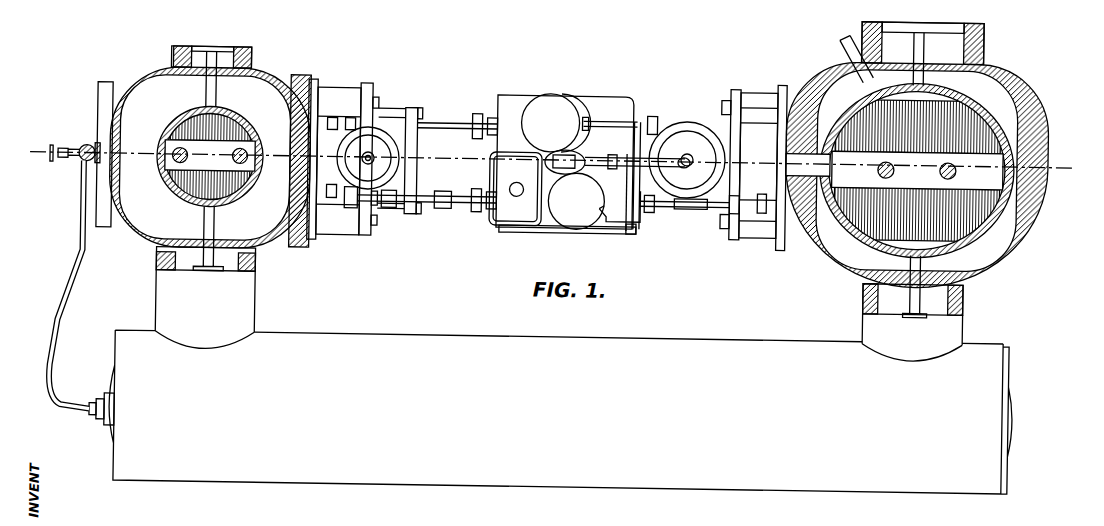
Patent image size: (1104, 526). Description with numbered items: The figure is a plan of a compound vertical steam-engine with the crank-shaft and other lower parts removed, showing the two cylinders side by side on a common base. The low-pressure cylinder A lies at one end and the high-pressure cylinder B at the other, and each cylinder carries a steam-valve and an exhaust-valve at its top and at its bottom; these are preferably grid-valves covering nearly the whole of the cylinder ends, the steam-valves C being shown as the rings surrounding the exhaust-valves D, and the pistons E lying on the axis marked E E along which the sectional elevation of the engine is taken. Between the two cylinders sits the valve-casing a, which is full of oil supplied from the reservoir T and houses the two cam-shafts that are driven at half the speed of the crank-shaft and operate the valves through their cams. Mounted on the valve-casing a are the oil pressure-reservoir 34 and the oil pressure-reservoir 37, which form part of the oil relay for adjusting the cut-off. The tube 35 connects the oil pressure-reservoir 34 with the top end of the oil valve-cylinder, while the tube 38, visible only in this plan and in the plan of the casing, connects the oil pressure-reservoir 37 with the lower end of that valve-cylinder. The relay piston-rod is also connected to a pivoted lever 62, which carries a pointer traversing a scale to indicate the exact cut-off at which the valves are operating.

The low-pressure cylinder A is at (1034, 100).
The high-pressure cylinder B is at (152, 84).
The steam-valves C is at (233, 115).
The exhaust-valves D is at (227, 210).
The pistons E is at (550, 267).
The reservoir T is at (515, 189).
The valve-casing a is at (613, 104).
The oil pressure-reservoir 34 is at (553, 108).
The tube 35 is at (628, 121).
The oil pressure-reservoir 37 is at (576, 201).
The tube 38 is at (636, 232).
The pivoted lever 62 is at (588, 158).